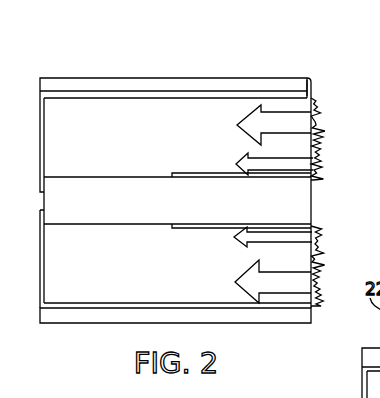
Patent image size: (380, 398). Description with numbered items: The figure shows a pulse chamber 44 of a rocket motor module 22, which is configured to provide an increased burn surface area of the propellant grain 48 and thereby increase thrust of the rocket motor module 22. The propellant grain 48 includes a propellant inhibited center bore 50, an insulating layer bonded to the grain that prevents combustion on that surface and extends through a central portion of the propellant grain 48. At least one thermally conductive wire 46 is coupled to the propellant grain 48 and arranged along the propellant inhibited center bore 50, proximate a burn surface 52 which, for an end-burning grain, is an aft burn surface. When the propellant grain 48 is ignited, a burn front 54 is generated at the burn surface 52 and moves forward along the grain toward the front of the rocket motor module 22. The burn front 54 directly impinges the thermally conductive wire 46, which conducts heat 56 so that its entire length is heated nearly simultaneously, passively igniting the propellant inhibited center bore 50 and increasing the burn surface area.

The rocket motor module 22 is at (80, 64).
The pulse chamber 44 is at (113, 89).
The thermally conductive wire 46 is at (192, 173).
The propellant grain 48 is at (132, 157).
The propellant inhibited center bore 50 is at (280, 202).
The burn surface 52 is at (310, 79).
The burn front 54 is at (272, 125).
The heat 56 is at (290, 163).